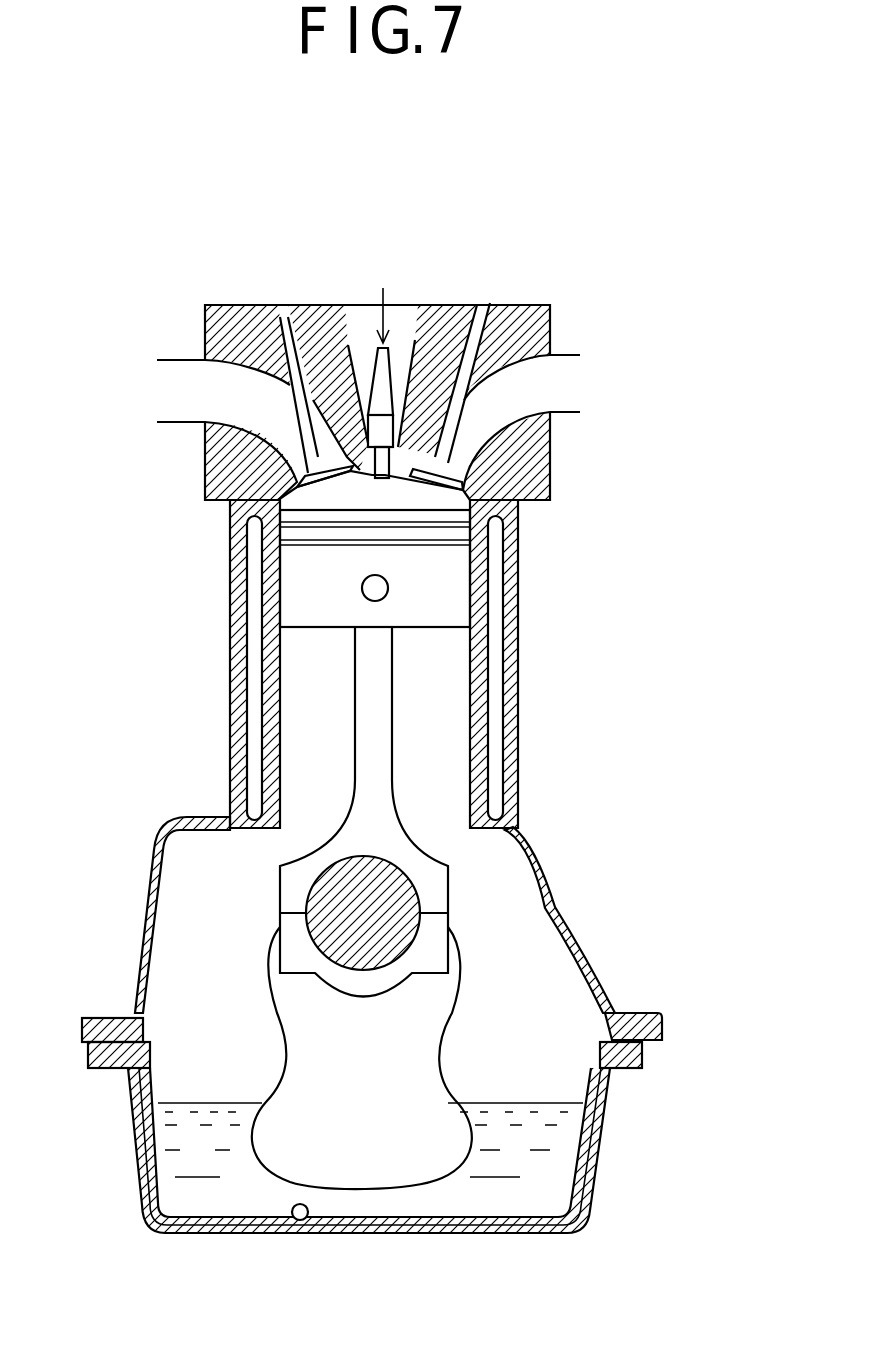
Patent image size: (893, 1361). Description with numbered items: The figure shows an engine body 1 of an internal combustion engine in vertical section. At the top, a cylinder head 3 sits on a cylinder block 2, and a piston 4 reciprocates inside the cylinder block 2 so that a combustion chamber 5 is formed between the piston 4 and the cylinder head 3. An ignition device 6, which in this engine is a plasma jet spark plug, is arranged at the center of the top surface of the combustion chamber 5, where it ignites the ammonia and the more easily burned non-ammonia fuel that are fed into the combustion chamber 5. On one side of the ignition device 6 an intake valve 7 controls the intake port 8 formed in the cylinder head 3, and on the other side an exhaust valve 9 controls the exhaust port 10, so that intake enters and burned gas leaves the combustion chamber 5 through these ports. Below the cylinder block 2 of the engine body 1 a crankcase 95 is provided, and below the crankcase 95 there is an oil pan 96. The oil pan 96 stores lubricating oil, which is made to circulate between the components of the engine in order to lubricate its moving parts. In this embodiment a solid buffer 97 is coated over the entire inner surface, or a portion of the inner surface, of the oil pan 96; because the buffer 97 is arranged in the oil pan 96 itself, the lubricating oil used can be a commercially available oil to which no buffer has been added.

The internal combustion engine body 1 is at (583, 297).
The cylinder block 2 is at (520, 672).
The cylinder head 3 is at (552, 476).
The piston 4 is at (455, 587).
The combustion chamber 5 is at (328, 503).
The ignition device 6 is at (393, 367).
The intake valve 7 is at (287, 323).
The intake port 8 is at (233, 373).
The exhaust valve 9 is at (472, 367).
The exhaust port 10 is at (523, 380).
The crankcase 95 is at (583, 932).
The oil pan 96 is at (595, 1177).
The buffer 97 is at (297, 1221).